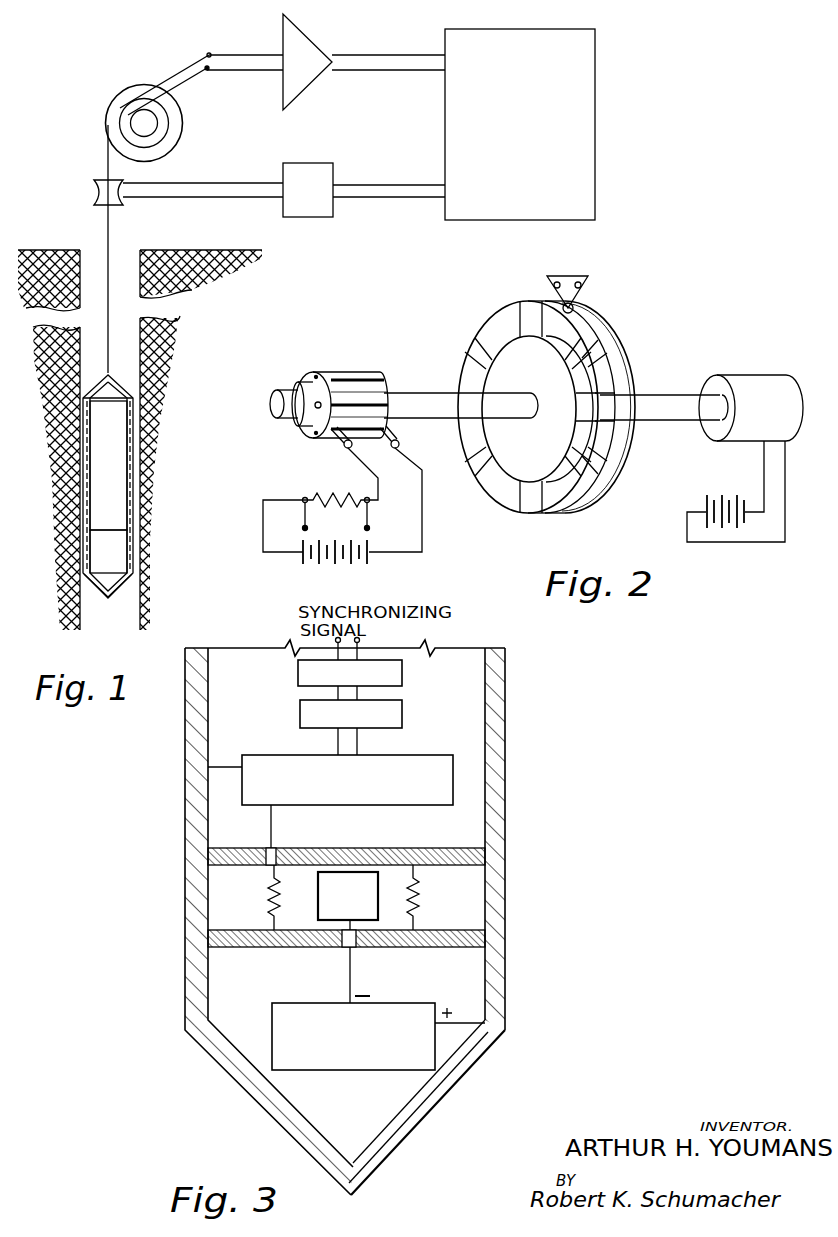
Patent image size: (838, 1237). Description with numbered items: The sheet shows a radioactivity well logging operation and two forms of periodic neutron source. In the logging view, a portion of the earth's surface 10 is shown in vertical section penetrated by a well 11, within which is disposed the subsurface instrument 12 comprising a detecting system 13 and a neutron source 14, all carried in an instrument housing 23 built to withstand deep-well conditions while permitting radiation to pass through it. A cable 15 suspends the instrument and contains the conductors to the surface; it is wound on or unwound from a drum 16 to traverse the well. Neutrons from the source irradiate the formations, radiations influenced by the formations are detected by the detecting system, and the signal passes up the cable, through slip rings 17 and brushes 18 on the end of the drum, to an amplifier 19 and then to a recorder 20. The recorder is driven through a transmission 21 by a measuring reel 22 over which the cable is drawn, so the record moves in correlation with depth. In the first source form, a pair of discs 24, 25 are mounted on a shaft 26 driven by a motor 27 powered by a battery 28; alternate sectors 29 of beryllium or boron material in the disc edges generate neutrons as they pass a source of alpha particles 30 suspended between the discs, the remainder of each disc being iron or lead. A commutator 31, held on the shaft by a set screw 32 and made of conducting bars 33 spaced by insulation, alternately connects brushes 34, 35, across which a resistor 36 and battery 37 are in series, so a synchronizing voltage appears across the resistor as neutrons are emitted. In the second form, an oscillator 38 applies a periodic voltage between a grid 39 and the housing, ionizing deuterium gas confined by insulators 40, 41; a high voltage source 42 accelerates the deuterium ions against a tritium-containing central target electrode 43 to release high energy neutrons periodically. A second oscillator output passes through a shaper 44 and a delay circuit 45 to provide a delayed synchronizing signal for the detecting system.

In FIG. 1, the earth's surface 10 is at (63, 328).
In FIG. 1, the well 11 is at (124, 300).
In FIG. 1, the subsurface instrument 12 is at (134, 383).
In FIG. 3, the subsurface instrument 12 is at (345, 917).
In FIG. 1, the detecting system 13 is at (122, 442).
In FIG. 1, the neutron source 14 is at (121, 567).
In FIG. 1, the cable 15 is at (112, 236).
In FIG. 1, the drum 16 is at (116, 103).
In FIG. 1, the slip rings 17 is at (162, 124).
In FIG. 1, the brushes 18 is at (192, 64).
In FIG. 1, the amplifier 19 is at (308, 42).
In FIG. 1, the recorder 20 is at (445, 117).
In FIG. 1, the transmission 21 is at (283, 176).
In FIG. 1, the measuring reel 22 is at (94, 180).
In FIG. 1, the instrument housing 23 is at (120, 589).
In FIG. 3, the instrument housing 23 is at (456, 1078).
In FIG. 2, the disc 24 is at (633, 368).
In FIG. 2, the disc 25 is at (495, 323).
In FIG. 2, the shaft 26 is at (667, 395).
In FIG. 2, the motor 27 is at (753, 375).
In FIG. 2, the battery 28 is at (705, 498).
In FIG. 2, the sectors 29 is at (594, 347).
In FIG. 2, the source of alpha particles 30 is at (577, 305).
In FIG. 2, the commutator 31 is at (308, 426).
In FIG. 2, the set screw 32 is at (313, 382).
In FIG. 2, the conducting bars 33 is at (380, 392).
In FIG. 2, the brush 34 is at (400, 444).
In FIG. 2, the brush 35 is at (345, 447).
In FIG. 2, the resistor 36 is at (342, 494).
In FIG. 2, the battery 37 is at (372, 546).
In FIG. 3, the oscillator 38 is at (438, 755).
In FIG. 3, the grid 39 is at (268, 893).
In FIG. 3, the insulator 40 is at (408, 850).
In FIG. 3, the insulator 41 is at (440, 948).
In FIG. 3, the high voltage source 42 is at (392, 1003).
In FIG. 3, the central target electrode 43 is at (318, 893).
In FIG. 3, the shaper 44 is at (403, 710).
In FIG. 3, the delay circuit 45 is at (403, 672).